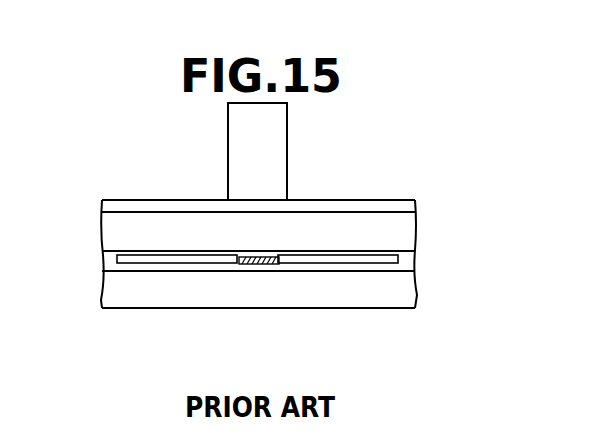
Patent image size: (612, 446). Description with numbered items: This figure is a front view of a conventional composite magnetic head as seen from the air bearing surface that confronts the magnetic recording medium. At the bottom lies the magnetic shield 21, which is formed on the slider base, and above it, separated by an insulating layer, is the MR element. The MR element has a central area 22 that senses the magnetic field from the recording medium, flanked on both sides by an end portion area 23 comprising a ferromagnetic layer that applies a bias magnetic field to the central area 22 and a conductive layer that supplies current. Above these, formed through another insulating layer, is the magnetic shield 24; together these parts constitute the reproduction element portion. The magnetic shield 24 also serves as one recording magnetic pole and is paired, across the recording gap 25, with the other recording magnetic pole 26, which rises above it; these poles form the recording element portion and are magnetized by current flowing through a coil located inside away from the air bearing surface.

The magnetic shield 21 is at (262, 298).
The central area 22 is at (248, 257).
The end portion area 23 is at (162, 258).
The magnetic shield 24 is at (402, 229).
The recording gap 25 is at (370, 207).
The recording magnetic pole 26 is at (265, 136).